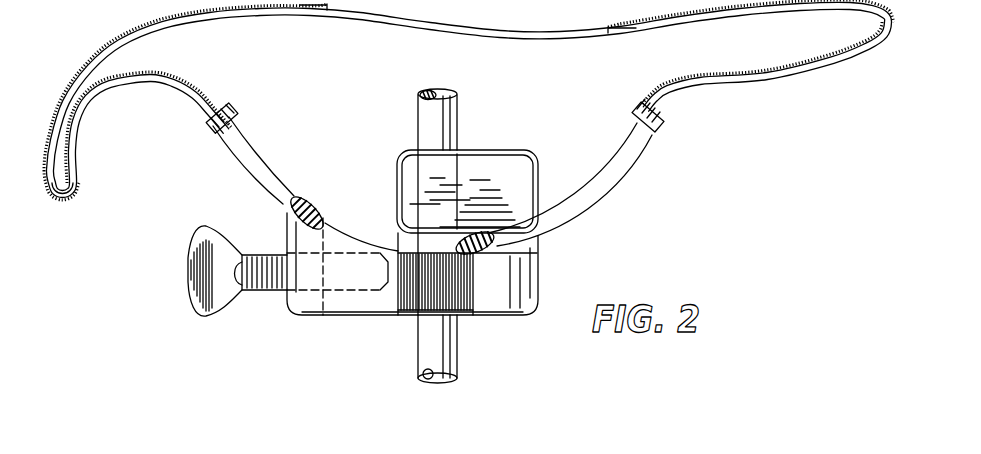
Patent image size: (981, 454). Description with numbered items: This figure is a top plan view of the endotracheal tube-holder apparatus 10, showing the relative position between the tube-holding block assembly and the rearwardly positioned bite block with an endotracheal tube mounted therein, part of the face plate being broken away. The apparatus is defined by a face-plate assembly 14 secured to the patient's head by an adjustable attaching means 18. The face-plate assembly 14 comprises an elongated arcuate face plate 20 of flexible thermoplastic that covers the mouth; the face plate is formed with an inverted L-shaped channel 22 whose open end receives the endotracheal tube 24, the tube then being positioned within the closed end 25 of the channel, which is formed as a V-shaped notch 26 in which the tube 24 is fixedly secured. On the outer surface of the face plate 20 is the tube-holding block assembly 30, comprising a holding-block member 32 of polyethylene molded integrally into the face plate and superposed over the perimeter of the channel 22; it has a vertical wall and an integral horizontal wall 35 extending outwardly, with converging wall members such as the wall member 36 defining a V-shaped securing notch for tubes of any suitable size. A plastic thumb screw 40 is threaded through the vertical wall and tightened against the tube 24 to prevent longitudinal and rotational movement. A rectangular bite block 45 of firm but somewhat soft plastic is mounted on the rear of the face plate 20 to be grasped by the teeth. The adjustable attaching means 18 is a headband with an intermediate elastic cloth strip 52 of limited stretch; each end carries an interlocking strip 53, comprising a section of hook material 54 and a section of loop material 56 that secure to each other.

The endotracheal tube-holder apparatus 10 is at (327, 326).
The face-plate assembly 14 is at (229, 159).
The adjustable attaching means 18 is at (73, 196).
The face plate 20 is at (593, 195).
The channel 22 is at (326, 222).
The endotracheal tube 24 is at (458, 122).
The closed end of the channel 25 is at (400, 243).
The V-shaped notch 26 is at (462, 252).
The tube-holding block assembly 30 is at (370, 314).
The holding-block member 32 is at (517, 302).
The horizontal wall 35 is at (302, 298).
The converging wall member 36 is at (523, 253).
The thumb screw 40 is at (213, 238).
The bite block 45 is at (508, 172).
The elastic cloth strip 52 is at (428, 24).
The interlocking strip of material 53 is at (79, 67).
The hook material 54 is at (192, 98).
The loop material 56 is at (270, 19).